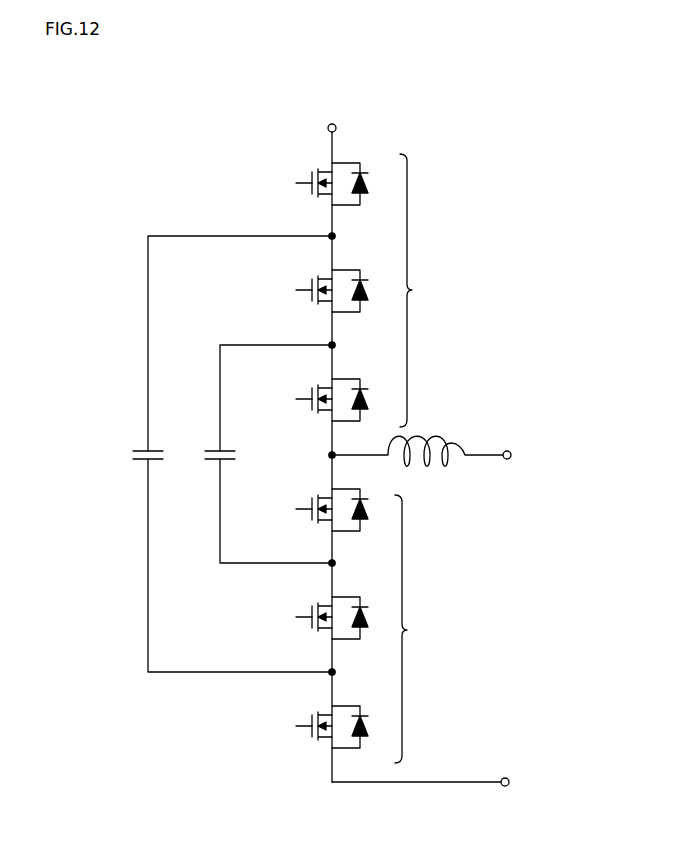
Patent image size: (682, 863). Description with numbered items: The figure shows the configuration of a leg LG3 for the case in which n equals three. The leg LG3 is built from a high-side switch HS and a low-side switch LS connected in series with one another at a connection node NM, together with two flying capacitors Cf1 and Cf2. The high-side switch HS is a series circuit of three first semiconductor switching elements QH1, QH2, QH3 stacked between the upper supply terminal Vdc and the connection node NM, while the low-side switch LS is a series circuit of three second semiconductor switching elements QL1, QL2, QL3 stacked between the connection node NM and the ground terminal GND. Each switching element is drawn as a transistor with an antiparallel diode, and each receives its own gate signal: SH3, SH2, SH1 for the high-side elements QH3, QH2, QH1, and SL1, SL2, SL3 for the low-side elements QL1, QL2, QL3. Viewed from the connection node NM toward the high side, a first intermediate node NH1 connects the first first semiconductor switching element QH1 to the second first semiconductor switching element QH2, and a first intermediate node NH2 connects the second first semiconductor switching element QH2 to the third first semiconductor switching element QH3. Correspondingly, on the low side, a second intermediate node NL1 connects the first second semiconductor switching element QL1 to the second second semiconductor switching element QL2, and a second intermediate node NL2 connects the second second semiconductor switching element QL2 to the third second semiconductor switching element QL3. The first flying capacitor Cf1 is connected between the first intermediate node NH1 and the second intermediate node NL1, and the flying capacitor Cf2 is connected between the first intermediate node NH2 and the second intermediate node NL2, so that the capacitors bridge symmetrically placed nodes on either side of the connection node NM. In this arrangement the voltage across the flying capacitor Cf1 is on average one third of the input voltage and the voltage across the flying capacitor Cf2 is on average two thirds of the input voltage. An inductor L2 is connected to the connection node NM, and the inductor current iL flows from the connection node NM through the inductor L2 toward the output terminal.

The leg LG3 is at (270, 102).
The DC voltage terminal Vdc is at (331, 117).
The ground terminal GND is at (443, 782).
The third first semiconductor switching element QH3 is at (329, 171).
The gate signal SH3 is at (286, 183).
The second first semiconductor switching element QH2 is at (329, 278).
The gate signal SH2 is at (286, 290).
The first first semiconductor switching element QH1 is at (329, 387).
The gate signal SH1 is at (286, 399).
The first second semiconductor switching element QL1 is at (329, 497).
The gate signal SL1 is at (287, 509).
The second second semiconductor switching element QL2 is at (329, 605).
The gate signal SL2 is at (287, 617).
The third second semiconductor switching element QL3 is at (329, 714).
The gate signal SL3 is at (287, 726).
The first intermediate node NH2 is at (336, 236).
The first intermediate node NH1 is at (336, 345).
The connection node NM is at (329, 455).
The second intermediate node NL1 is at (336, 563).
The second intermediate node NL2 is at (336, 672).
The flying capacitor Cf2 is at (141, 448).
The first flying capacitor Cf1 is at (213, 448).
The inductor L2 is at (437, 437).
The inductor current iL is at (449, 484).
The high-side switch HS is at (420, 290).
The low-side switch LS is at (413, 629).